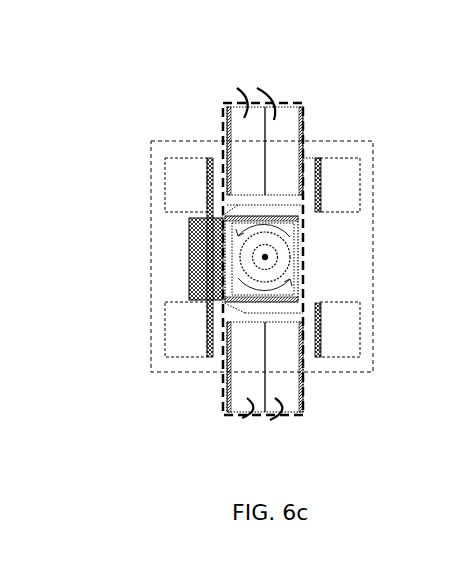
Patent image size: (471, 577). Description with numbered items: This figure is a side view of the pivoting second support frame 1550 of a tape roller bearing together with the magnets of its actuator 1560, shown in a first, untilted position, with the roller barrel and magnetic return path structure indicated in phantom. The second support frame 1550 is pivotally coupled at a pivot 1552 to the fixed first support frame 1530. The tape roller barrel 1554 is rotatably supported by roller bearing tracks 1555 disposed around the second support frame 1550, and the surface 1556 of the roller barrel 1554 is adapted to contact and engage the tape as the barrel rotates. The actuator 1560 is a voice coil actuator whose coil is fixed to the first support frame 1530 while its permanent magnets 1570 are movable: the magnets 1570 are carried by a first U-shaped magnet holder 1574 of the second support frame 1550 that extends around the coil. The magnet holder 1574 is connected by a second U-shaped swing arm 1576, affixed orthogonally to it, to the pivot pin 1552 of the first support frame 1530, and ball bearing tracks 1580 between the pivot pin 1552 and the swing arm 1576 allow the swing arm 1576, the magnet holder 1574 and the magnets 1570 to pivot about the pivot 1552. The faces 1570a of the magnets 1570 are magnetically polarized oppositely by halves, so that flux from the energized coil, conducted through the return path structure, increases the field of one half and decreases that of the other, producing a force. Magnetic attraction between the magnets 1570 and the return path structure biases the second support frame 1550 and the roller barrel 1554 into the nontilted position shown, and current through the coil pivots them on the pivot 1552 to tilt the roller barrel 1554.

The first support frame 1530 is at (285, 100).
The second support frame 1550 is at (188, 247).
The pivot 1552 is at (266, 262).
The tape roller barrel 1554 is at (374, 208).
The roller bearing tracks 1555 is at (188, 166).
The surface of the roller barrel 1556 is at (373, 270).
The actuator 1560 is at (160, 90).
The permanent magnets 1570 is at (287, 120).
The faces of the magnets 1570a is at (262, 91).
The U-shaped magnet holder 1574 is at (312, 156).
The U-shaped swing arm 1576 is at (203, 282).
The ball bearing tracks 1580 is at (275, 248).